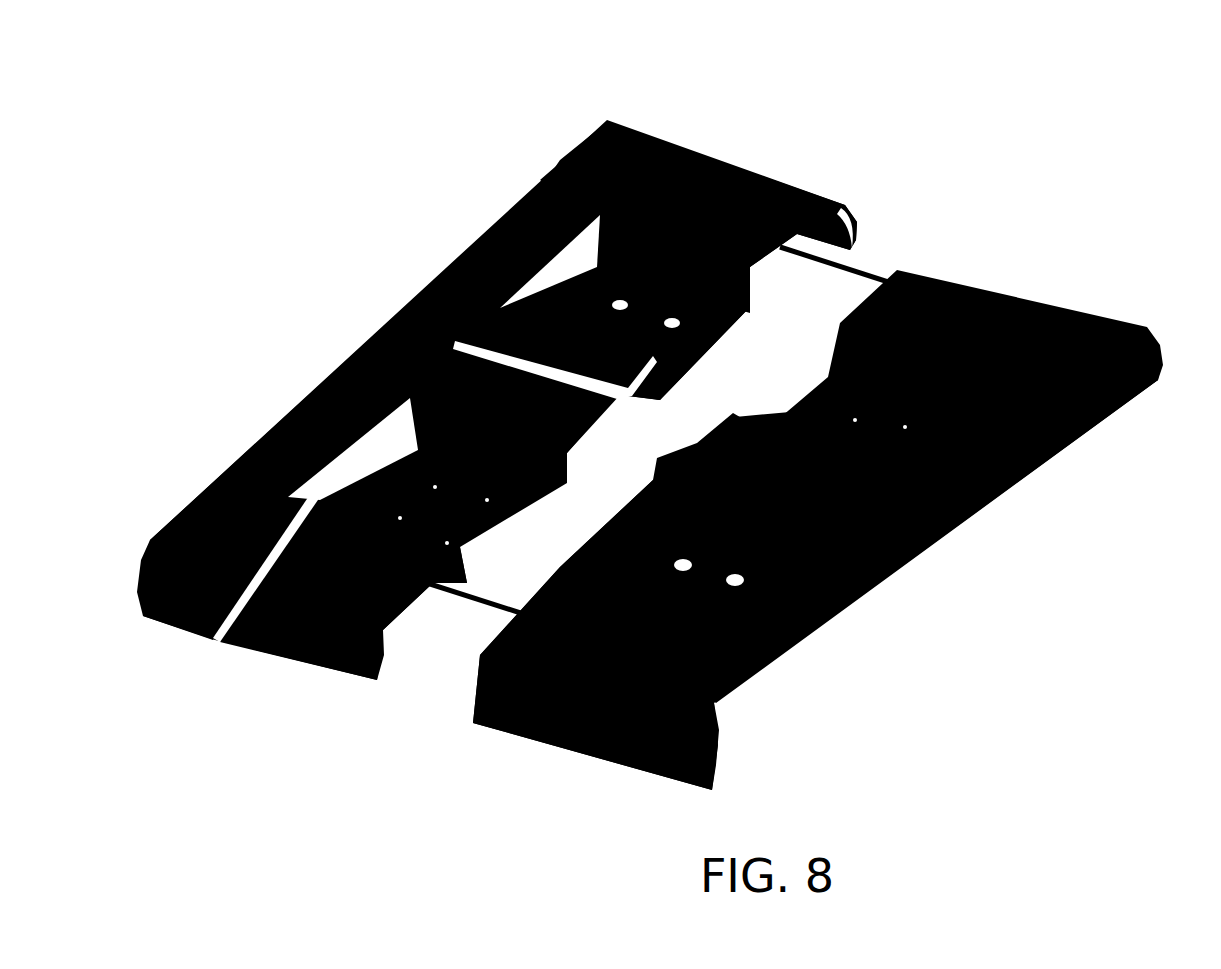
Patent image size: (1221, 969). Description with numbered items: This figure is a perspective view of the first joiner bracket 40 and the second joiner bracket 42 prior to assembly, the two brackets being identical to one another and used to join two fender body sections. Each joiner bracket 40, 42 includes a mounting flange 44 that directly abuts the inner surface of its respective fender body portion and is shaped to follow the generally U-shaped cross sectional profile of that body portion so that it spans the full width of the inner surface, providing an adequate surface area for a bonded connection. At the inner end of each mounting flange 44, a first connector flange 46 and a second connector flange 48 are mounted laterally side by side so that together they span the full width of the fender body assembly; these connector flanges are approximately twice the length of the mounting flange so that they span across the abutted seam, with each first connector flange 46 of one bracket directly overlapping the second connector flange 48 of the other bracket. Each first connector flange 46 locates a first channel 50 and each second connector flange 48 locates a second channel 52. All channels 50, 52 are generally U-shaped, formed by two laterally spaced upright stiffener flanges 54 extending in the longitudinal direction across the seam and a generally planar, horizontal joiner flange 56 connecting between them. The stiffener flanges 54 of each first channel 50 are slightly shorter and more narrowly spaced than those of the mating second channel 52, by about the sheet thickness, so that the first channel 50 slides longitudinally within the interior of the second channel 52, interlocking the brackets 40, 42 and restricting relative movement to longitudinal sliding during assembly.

The first joiner bracket 40 is at (789, 101).
The second joiner bracket 42 is at (1053, 196).
The mounting flange 44 is at (427, 282).
The first connector flange 46 is at (768, 205).
The second connector flange 48 is at (1017, 300).
The first channel 50 is at (651, 300).
The second channel 52 is at (378, 466).
The upright stiffener flange 54 is at (752, 297).
The joiner flange 56 is at (695, 350).